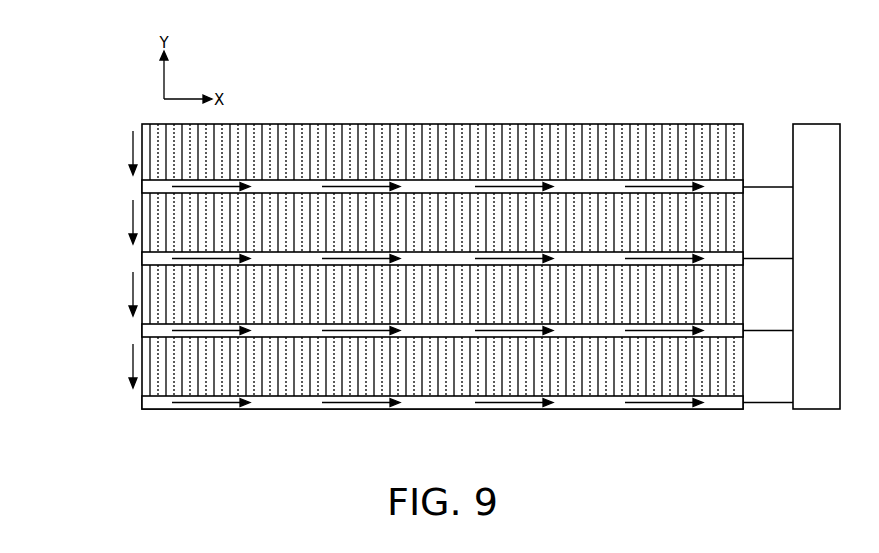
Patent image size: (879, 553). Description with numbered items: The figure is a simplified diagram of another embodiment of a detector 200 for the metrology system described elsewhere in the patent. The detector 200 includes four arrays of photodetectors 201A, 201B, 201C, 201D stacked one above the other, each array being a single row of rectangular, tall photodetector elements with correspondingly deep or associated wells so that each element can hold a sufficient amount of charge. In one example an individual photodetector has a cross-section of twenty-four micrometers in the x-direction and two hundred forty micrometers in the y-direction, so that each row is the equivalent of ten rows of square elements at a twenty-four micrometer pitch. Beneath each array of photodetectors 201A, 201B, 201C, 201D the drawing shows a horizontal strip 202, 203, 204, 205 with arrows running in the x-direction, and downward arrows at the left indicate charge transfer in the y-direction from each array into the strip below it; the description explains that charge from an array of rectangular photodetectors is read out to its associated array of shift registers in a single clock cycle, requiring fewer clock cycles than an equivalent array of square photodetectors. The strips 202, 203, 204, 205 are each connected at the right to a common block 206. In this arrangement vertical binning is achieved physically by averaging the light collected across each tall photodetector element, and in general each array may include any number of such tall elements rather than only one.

The detector 200 is at (757, 100).
The array of photodetectors 201A is at (442, 152).
The array of photodetectors 201B is at (442, 222).
The array of photodetectors 201C is at (442, 294).
The array of photodetectors 201D is at (442, 366).
The first flow channel 202 is at (142, 187).
The second flow channel 203 is at (142, 259).
The third flow channel 204 is at (142, 331).
The fourth flow channel 205 is at (142, 403).
The outlet / collection reservoir 206 is at (830, 272).